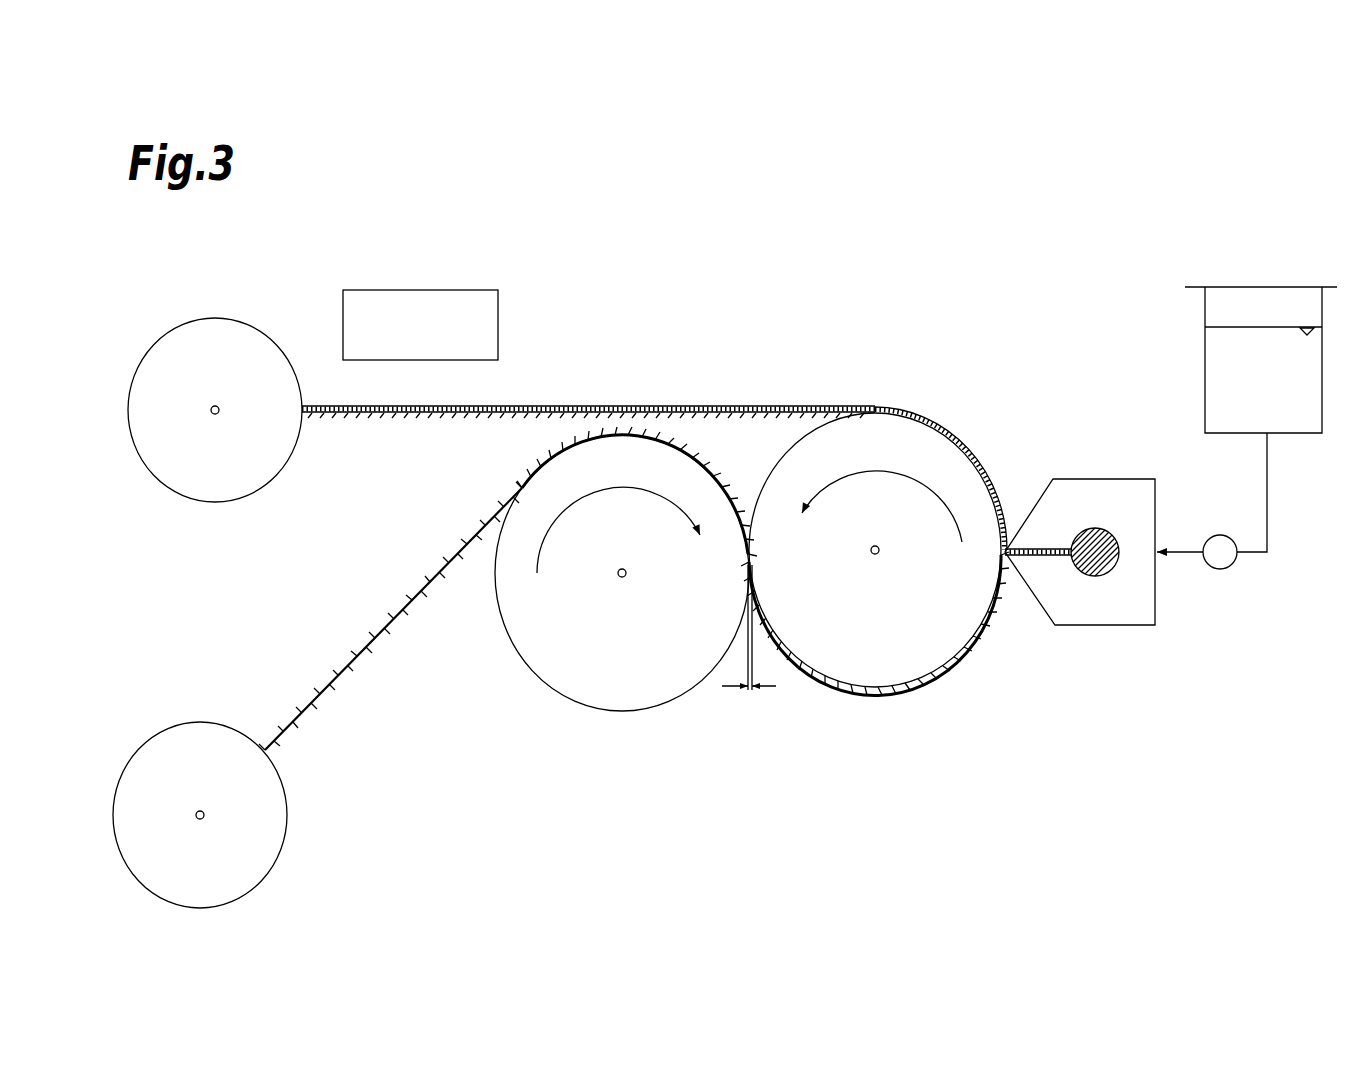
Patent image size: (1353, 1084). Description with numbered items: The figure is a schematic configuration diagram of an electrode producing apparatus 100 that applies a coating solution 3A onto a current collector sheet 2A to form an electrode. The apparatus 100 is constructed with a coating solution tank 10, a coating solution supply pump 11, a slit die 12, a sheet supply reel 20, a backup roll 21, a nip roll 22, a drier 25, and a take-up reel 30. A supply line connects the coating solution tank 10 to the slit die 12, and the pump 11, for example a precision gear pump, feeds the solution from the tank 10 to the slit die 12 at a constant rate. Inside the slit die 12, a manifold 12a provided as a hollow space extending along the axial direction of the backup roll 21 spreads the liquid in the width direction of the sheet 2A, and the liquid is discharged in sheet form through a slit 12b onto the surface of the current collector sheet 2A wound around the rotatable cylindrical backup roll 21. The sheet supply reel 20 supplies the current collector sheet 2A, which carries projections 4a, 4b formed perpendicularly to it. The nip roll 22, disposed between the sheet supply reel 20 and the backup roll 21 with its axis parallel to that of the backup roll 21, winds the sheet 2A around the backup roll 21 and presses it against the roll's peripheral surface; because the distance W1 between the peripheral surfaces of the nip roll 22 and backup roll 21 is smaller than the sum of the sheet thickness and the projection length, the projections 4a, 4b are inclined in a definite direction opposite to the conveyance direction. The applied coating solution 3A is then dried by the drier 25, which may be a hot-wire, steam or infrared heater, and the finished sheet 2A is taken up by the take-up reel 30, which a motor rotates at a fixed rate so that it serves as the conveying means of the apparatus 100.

The electrode producing apparatus 100 is at (1138, 200).
The coating solution tank 10 is at (1292, 287).
The coating solution supply pump 11 is at (1220, 570).
The slit die 12 is at (1080, 547).
The manifold 12a is at (1098, 578).
The slit 12b is at (1052, 557).
The coating solution 3A is at (940, 430).
The current collector sheet 2A is at (626, 588).
The projection 4a is at (365, 655).
The projection 4b is at (378, 615).
The sheet supply reel 20 is at (258, 818).
The backup roll 21 is at (885, 668).
The nip roll 22 is at (620, 668).
The drier 25 is at (448, 290).
The take-up reel 30 is at (222, 465).
The distance W1 is at (749, 646).